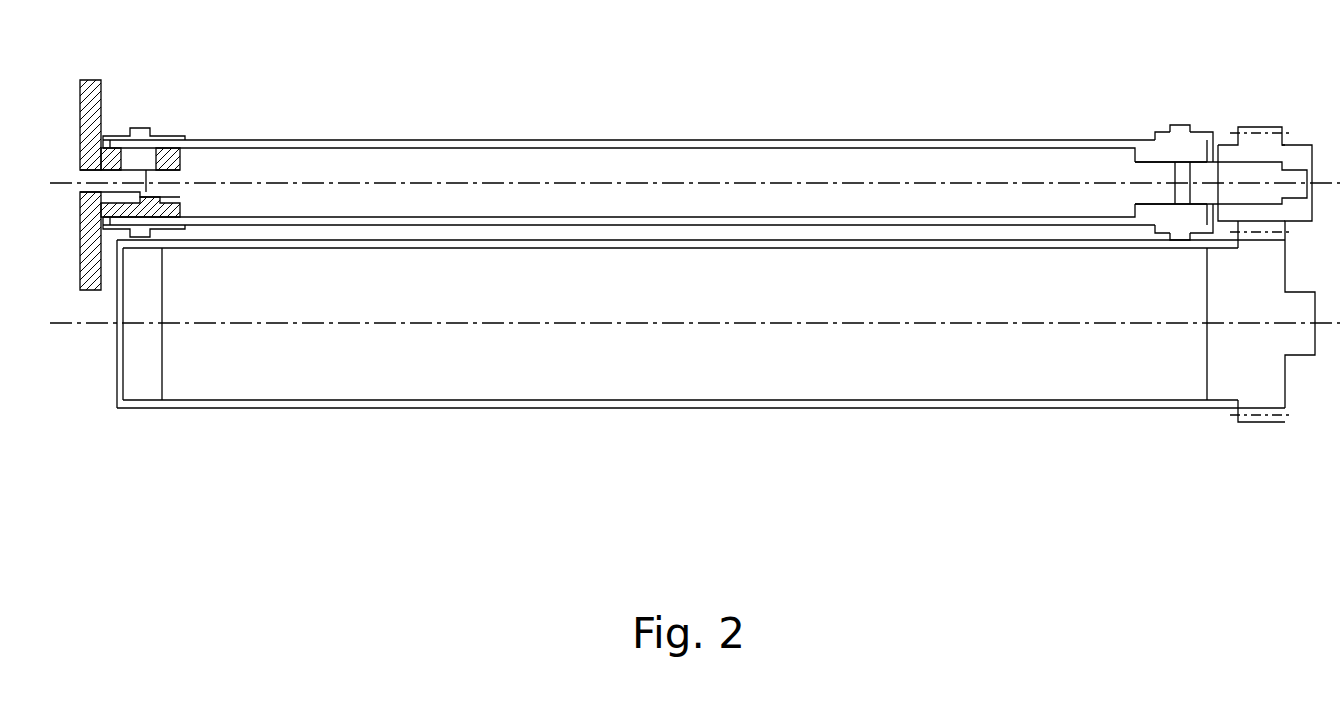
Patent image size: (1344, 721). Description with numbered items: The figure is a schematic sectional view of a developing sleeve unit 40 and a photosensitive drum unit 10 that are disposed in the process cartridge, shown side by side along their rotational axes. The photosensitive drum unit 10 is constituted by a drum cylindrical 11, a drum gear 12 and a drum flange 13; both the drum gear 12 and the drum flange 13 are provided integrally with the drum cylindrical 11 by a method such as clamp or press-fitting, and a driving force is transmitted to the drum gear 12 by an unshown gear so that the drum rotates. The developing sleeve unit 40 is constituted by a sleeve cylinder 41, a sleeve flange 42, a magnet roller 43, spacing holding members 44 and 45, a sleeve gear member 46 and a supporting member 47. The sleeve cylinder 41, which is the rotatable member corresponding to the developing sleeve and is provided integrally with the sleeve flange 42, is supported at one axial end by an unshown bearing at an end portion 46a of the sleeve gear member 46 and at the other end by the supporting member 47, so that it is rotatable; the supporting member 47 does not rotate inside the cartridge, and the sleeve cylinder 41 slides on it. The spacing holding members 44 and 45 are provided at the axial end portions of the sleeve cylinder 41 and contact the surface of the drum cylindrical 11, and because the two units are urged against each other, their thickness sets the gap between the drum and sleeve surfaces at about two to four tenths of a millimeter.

The photosensitive drum unit 10 is at (710, 442).
The drum cylindrical 11 is at (313, 408).
The drum gear 12 is at (1218, 390).
The drum flange 13 is at (127, 378).
The developing sleeve unit 40 is at (745, 111).
The sleeve cylinder 41 is at (945, 140).
The sleeve flange 42 is at (1142, 145).
The magnet roller 43 is at (1030, 165).
The spacing holding member 44 is at (1177, 124).
The spacing holding member 45 is at (145, 126).
The sleeve gear member 46 is at (1248, 126).
The end portion of the sleeve gear member 46a is at (1292, 143).
The supporting member 47 is at (100, 80).